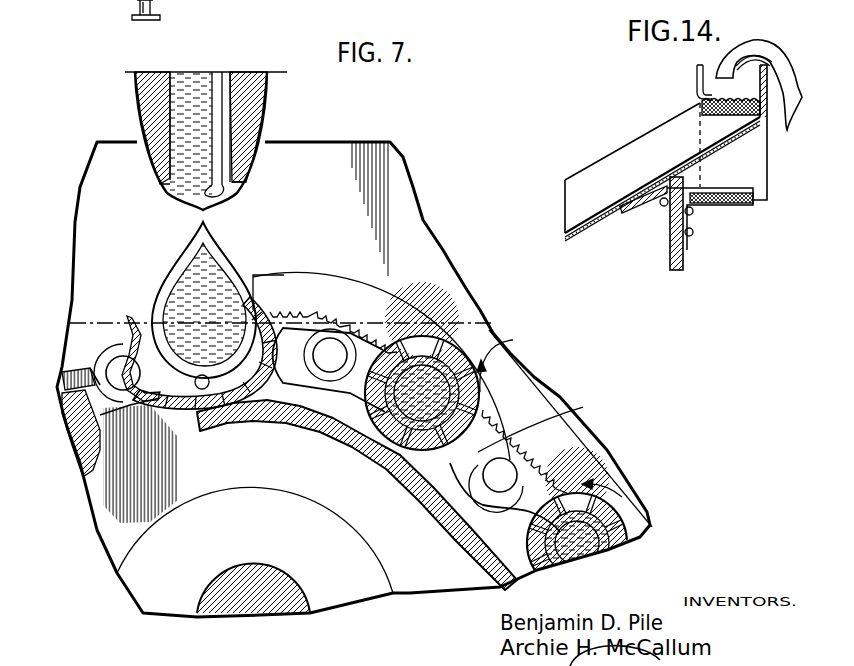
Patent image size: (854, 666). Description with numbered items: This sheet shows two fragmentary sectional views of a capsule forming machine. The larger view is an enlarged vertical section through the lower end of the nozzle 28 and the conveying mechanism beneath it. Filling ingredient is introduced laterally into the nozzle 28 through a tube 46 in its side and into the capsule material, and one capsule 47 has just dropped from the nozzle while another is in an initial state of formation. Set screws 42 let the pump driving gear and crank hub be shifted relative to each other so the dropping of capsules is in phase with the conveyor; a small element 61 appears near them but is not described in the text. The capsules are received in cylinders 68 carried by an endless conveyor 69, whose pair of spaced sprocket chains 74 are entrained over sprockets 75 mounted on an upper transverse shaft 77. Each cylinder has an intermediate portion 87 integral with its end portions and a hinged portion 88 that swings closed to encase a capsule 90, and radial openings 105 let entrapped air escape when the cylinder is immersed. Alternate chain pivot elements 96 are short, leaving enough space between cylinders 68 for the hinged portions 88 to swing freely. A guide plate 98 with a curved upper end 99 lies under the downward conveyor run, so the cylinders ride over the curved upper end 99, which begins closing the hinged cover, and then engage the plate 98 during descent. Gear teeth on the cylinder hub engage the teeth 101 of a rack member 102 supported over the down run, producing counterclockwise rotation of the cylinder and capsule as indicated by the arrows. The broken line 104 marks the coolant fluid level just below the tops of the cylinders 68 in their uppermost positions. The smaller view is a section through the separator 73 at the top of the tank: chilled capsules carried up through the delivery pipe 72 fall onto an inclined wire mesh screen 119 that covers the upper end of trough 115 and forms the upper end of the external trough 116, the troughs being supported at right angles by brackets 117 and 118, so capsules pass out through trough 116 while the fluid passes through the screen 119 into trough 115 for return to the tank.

In FIG. 7, the set screws 42 is at (128, 10).
In FIG. 7, the stop member 61 is at (152, 5).
In FIG. 7, the nozzle 28 is at (270, 117).
In FIG. 7, the tube 46 is at (223, 193).
In FIG. 7, the sprockets 75 is at (113, 543).
In FIG. 7, the broken line 104 is at (100, 323).
In FIG. 7, the upper transverse shaft 77 is at (240, 573).
In FIG. 7, the guide plate 98 is at (433, 510).
In FIG. 7, the curved upper end 99 is at (268, 423).
In FIG. 7, the capsule 47 is at (227, 272).
In FIG. 7, the endless conveyor 69 is at (305, 305).
In FIG. 7, the hinged portion 88 is at (108, 333).
In FIG. 7, the rack member 102 is at (397, 317).
In FIG. 7, the intermediate portion 87 is at (263, 383).
In FIG. 7, the rack gear teeth 101 is at (297, 306).
In FIG. 7, the radial openings 105 is at (435, 386).
In FIG. 7, the sprocket chains 74 is at (531, 462).
In FIG. 7, the alternate chain pivot elements 96 is at (328, 363).
In FIG. 7, the capsule 90 is at (513, 340).
In FIG. 7, the cylinders 68 is at (180, 417).
In FIG. 14, the delivery pipe 72 is at (747, 43).
In FIG. 14, the screen 119 is at (700, 63).
In FIG. 14, the separator 73 is at (697, 93).
In FIG. 14, the trough 116 is at (747, 179).
In FIG. 14, the trough 115 is at (577, 232).
In FIG. 14, the bracket 117 is at (667, 197).
In FIG. 14, the bracket 118 is at (716, 201).